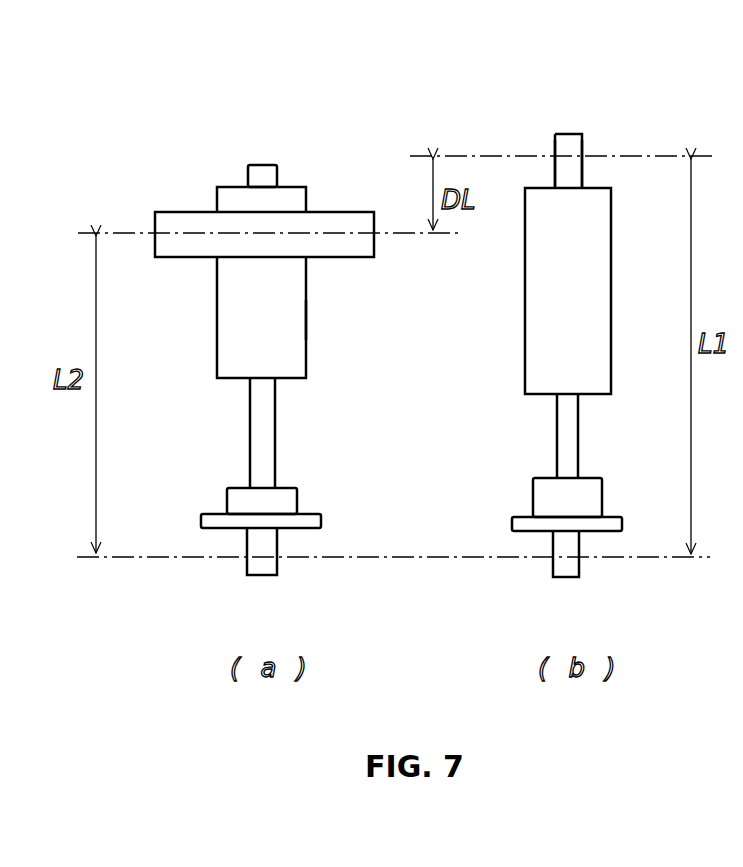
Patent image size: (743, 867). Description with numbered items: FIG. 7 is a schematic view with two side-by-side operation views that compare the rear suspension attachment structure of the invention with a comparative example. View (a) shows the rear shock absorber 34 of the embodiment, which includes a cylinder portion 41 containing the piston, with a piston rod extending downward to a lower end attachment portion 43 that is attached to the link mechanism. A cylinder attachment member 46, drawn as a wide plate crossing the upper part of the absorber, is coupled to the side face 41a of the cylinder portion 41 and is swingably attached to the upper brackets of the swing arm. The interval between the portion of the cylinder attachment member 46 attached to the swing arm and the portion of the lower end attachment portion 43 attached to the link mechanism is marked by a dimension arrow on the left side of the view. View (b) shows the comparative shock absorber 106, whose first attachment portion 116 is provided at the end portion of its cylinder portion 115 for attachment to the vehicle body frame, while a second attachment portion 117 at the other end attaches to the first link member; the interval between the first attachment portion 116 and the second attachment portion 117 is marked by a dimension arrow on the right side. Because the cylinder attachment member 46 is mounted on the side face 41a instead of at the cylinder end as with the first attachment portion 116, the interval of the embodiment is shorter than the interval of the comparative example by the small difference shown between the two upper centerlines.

The rear shock absorber 34 is at (221, 186).
The cylinder attachment member 46 is at (172, 212).
The cylinder portion 41 is at (215, 321).
The side face of the cylinder portion 41a is at (307, 320).
The lower end attachment portion 43 is at (245, 565).
The shock absorber 106 is at (573, 133).
The first attachment portion 116 is at (583, 143).
The cylinder portion 115 is at (611, 283).
The second attachment portion 117 is at (582, 568).